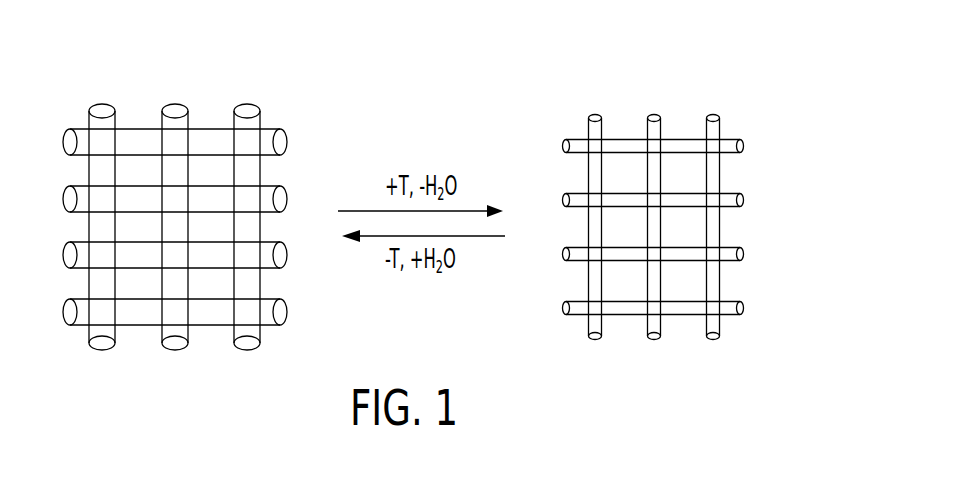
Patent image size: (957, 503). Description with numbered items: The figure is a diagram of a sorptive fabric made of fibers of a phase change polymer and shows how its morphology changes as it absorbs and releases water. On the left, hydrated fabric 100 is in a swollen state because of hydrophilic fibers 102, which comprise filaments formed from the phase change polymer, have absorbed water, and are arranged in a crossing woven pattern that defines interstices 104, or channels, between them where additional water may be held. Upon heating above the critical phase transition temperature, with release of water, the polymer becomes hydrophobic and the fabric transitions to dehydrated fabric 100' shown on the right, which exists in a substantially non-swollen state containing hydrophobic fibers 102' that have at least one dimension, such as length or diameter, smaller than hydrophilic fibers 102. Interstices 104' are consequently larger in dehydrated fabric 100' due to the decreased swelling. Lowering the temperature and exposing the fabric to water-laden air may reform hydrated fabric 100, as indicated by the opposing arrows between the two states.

The hydrated fabric 100 is at (202, 220).
The hydrophilic fibers 102 is at (159, 188).
The interstices 104 is at (175, 277).
The dehydrated fabric 100' is at (679, 210).
The hydrophobic fibers 102' is at (638, 188).
The interstices 104' is at (653, 274).